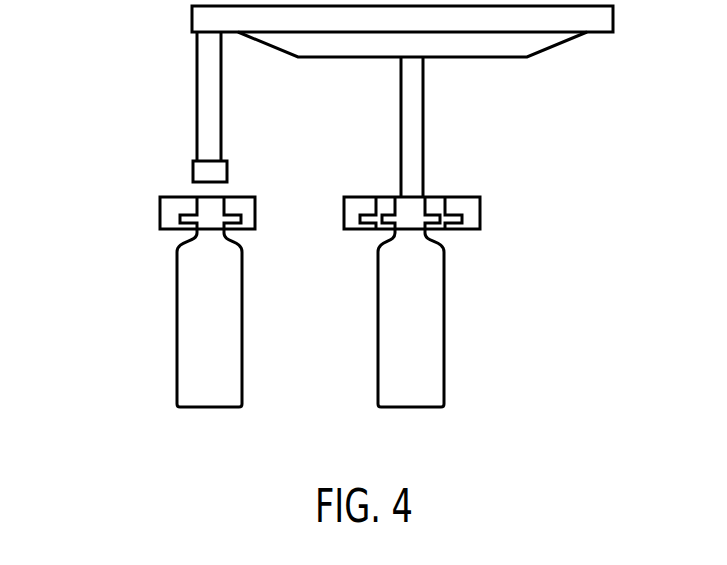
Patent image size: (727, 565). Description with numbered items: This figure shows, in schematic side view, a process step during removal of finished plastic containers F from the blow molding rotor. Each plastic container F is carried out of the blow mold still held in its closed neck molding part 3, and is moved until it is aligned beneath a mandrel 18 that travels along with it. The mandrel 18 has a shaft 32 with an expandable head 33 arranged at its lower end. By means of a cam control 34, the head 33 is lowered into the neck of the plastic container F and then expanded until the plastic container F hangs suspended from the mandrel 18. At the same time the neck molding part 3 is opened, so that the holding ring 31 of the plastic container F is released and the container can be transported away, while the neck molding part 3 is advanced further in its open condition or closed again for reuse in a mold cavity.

The mandrel 18 is at (161, 45).
The shaft 32 is at (199, 72).
The expandable head 33 is at (193, 172).
The cam control 34 is at (333, 57).
The neck molding part 3 is at (356, 232).
The holding ring 31 is at (383, 229).
The plastic container F is at (178, 335).